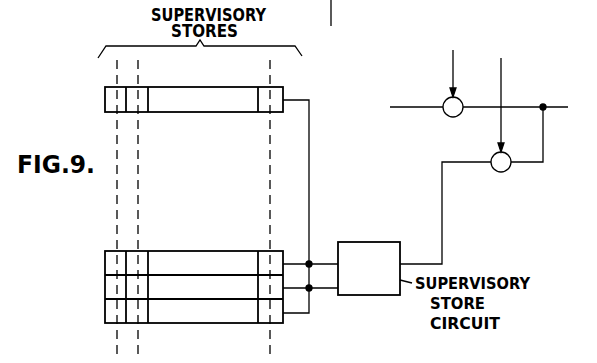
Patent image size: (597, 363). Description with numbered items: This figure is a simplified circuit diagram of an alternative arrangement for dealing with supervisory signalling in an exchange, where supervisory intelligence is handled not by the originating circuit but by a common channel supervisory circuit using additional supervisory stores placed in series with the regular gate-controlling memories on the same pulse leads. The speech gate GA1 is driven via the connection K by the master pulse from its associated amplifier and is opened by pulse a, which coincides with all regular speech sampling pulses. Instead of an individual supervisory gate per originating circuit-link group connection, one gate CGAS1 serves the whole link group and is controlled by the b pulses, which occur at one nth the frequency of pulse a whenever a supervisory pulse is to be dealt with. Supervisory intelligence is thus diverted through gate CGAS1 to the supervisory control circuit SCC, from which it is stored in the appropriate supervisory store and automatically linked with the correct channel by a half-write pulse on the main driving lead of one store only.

The supervisory control circuit SCC is at (369, 268).
The speech gate GA1 is at (479, 117).
The common supervisory gate CGAS1 is at (505, 154).
The pulse a is at (452, 64).
The pulse b is at (500, 95).
The connection K is at (339, 13).